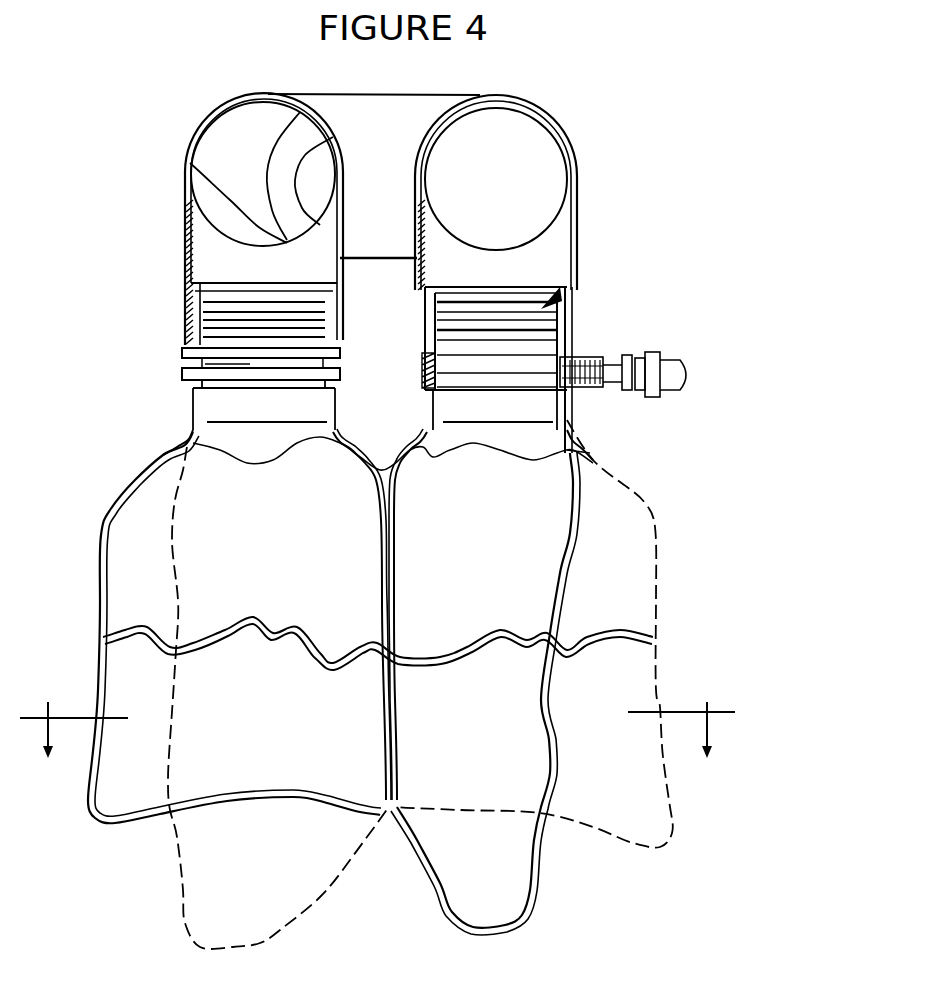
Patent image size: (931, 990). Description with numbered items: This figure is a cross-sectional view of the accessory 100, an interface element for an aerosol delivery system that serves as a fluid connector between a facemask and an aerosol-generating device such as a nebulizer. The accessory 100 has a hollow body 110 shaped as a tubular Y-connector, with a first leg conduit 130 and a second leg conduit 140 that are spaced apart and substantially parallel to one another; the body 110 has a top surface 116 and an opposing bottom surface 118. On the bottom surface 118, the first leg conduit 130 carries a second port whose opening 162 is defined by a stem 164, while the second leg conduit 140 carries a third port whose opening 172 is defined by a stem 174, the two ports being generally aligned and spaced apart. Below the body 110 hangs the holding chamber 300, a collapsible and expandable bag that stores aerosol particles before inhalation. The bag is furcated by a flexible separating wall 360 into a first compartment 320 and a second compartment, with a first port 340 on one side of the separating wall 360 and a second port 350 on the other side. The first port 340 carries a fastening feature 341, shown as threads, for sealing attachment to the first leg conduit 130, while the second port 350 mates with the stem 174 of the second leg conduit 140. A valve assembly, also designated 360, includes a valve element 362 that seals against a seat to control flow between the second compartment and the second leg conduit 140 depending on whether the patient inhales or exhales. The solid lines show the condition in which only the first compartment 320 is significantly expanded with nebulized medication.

The accessory 100 is at (668, 211).
The body 110 is at (205, 108).
The top surface 116 is at (385, 94).
The bottom surface 118 is at (383, 262).
The first leg conduit 130 is at (250, 128).
The second leg conduit 140 is at (537, 113).
The opening 162 is at (191, 165).
The stem 164 is at (188, 222).
The opening 172 is at (495, 250).
The stem 174 is at (583, 292).
The holding chamber 300 is at (122, 477).
The first compartment 320 is at (137, 573).
The first port 340 is at (188, 254).
The fastening feature 341 is at (198, 311).
The second port 350 is at (500, 295).
The separating wall 360 is at (552, 297).
The valve element 362 is at (562, 333).